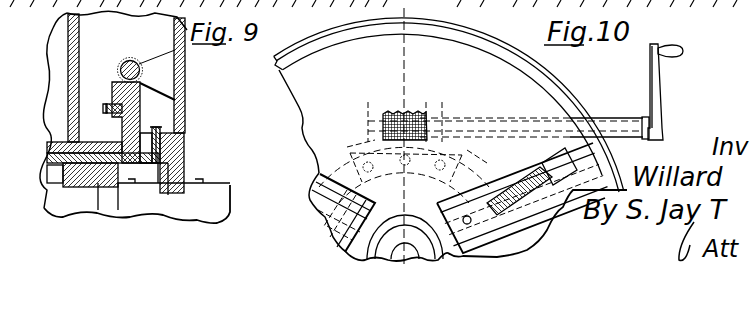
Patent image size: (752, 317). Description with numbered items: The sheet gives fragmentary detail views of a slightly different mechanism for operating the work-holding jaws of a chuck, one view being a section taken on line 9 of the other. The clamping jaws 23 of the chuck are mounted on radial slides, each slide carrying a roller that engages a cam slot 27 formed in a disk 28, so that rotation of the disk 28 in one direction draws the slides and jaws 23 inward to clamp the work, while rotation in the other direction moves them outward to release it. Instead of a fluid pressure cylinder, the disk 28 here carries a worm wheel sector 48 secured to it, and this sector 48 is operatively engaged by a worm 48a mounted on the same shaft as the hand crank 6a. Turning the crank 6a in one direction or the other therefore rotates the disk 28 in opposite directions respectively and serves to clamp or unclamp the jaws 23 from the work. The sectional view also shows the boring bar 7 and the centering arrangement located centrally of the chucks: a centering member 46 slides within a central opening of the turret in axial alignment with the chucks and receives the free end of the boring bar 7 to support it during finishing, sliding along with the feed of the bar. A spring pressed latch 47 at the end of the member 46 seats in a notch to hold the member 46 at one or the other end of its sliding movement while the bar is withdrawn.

In FIG. 9, the worm 48a is at (130, 60).
In FIG. 10, the worm 48a is at (405, 112).
In FIG. 9, the worm wheel sector 48 is at (112, 96).
In FIG. 10, the worm wheel sector 48 is at (360, 150).
In FIG. 9, the disk 28 is at (140, 127).
In FIG. 10, the disk 28 is at (328, 220).
In FIG. 9, the boring bar 7 is at (212, 197).
In FIG. 9, the centering member 46 is at (58, 187).
In FIG. 9, the spring pressed latch 47 is at (158, 167).
In FIG. 10, the clamping jaws 23 is at (553, 160).
In FIG. 10, the crank 6a is at (660, 96).
In FIG. 10, the cam slot 27 is at (328, 236).
In FIG. 10, the section line 9— 9 is at (390, 13).